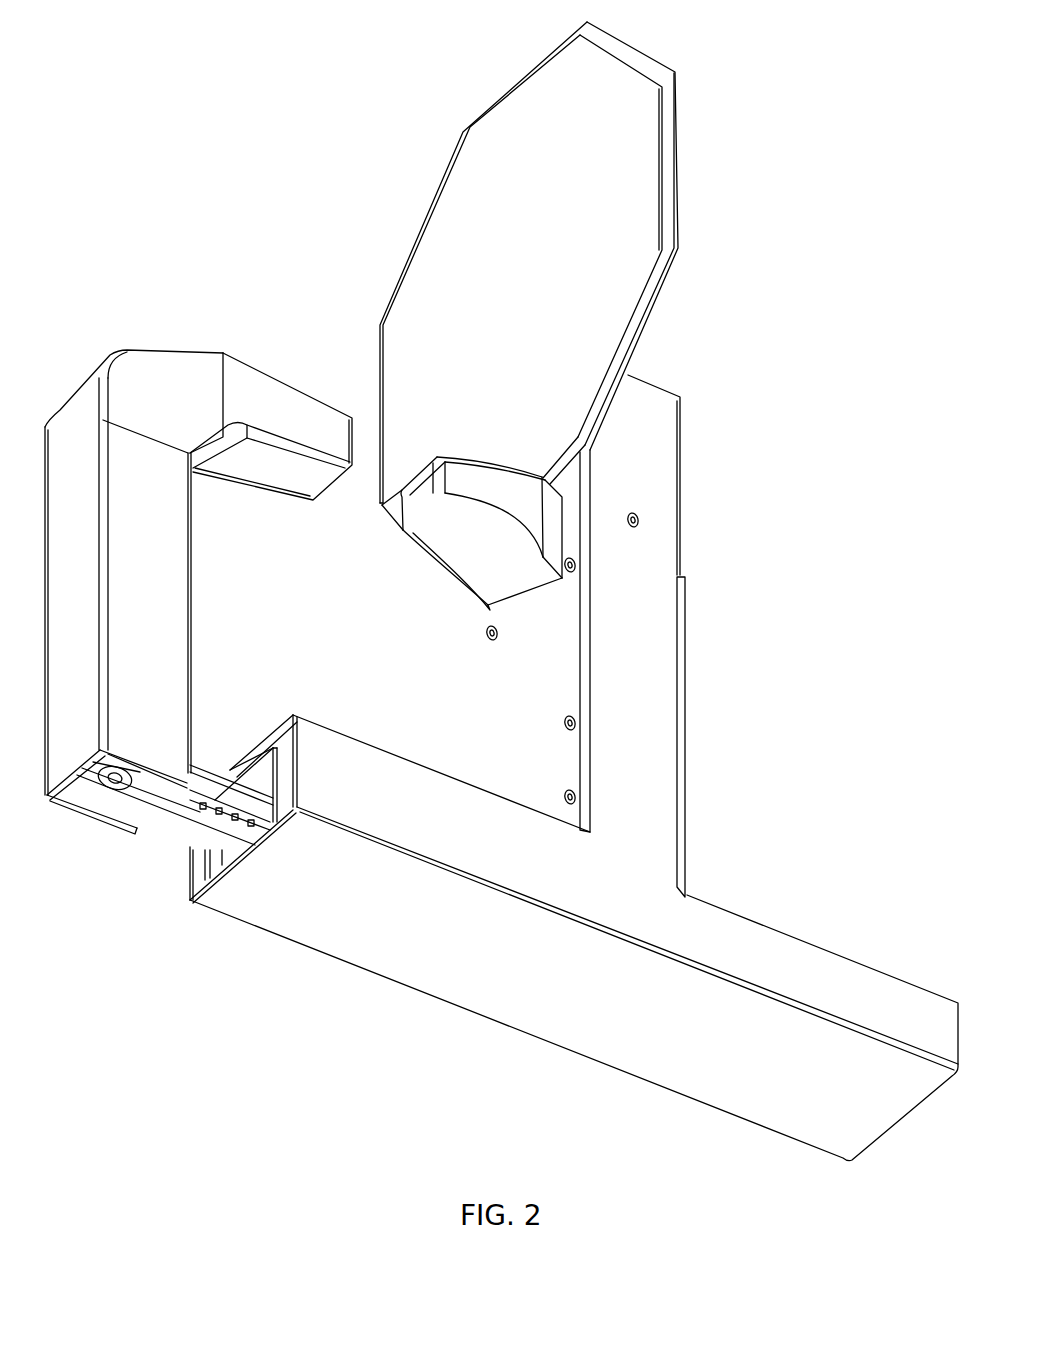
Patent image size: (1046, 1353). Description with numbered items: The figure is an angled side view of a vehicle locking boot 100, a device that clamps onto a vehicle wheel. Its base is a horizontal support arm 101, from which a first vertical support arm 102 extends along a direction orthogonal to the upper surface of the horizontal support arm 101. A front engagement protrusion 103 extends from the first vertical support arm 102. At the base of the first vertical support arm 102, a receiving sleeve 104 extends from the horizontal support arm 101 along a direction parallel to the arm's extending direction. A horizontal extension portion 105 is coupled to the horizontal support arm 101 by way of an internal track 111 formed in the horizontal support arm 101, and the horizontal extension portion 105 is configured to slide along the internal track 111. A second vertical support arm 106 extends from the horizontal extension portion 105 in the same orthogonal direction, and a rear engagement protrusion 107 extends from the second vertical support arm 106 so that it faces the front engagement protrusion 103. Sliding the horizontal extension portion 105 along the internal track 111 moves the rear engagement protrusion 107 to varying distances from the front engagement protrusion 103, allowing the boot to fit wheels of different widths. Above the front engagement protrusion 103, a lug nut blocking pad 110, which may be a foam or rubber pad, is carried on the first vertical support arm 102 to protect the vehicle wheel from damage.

The vehicle locking boot 100 is at (178, 132).
The horizontal support arm 101 is at (397, 782).
The first vertical support arm 102 is at (645, 725).
The front engagement protrusion 103 is at (522, 503).
The receiving sleeve 104 is at (873, 995).
The horizontal extension portion 105 is at (167, 820).
The second vertical support arm 106 is at (143, 537).
The rear engagement protrusion 107 is at (282, 397).
The lug nut blocking pad 110 is at (593, 88).
The internal track 111 is at (248, 765).